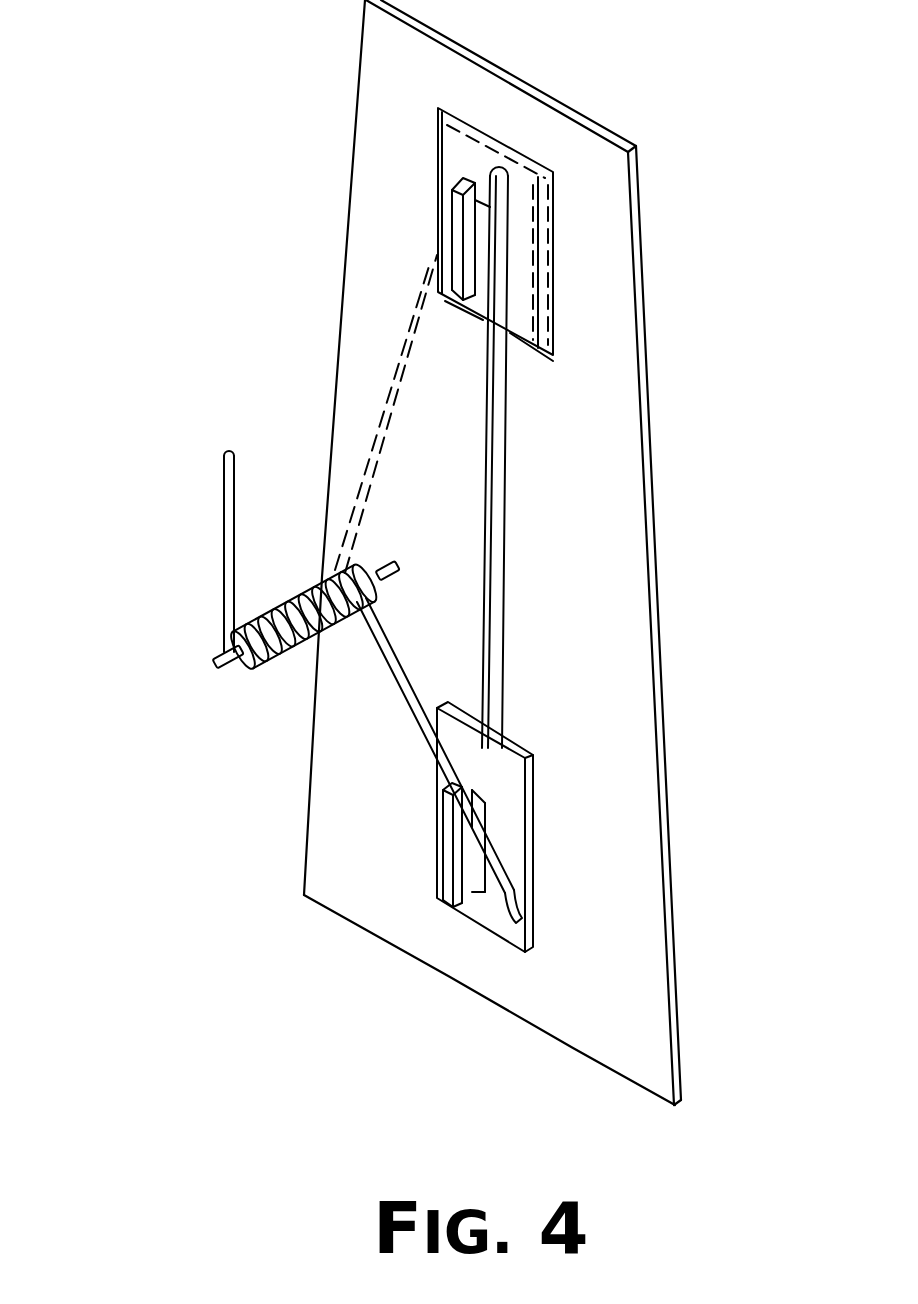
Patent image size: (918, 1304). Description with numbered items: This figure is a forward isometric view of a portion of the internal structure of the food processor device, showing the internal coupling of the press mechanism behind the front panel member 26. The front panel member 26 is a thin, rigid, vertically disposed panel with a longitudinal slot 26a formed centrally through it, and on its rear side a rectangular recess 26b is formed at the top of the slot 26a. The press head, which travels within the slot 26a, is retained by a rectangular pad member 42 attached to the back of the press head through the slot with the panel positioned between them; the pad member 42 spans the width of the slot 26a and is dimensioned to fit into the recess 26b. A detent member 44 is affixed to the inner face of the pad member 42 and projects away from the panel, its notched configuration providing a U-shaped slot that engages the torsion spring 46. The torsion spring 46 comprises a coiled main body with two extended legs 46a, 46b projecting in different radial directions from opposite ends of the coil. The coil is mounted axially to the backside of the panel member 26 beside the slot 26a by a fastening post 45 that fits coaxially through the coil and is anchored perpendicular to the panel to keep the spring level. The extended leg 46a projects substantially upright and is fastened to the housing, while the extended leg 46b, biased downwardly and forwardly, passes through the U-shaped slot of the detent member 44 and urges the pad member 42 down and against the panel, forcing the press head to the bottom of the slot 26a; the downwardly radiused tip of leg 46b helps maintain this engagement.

The front panel member 26 is at (352, 157).
The slot 26a is at (505, 560).
The rectangular recess 26b is at (555, 265).
The pad member 42 is at (550, 207).
The detent member 44 is at (447, 885).
The fastening post 45 is at (212, 665).
The torsion spring 46 is at (278, 673).
The extended leg 46a is at (223, 510).
The extended leg 46b is at (403, 337).